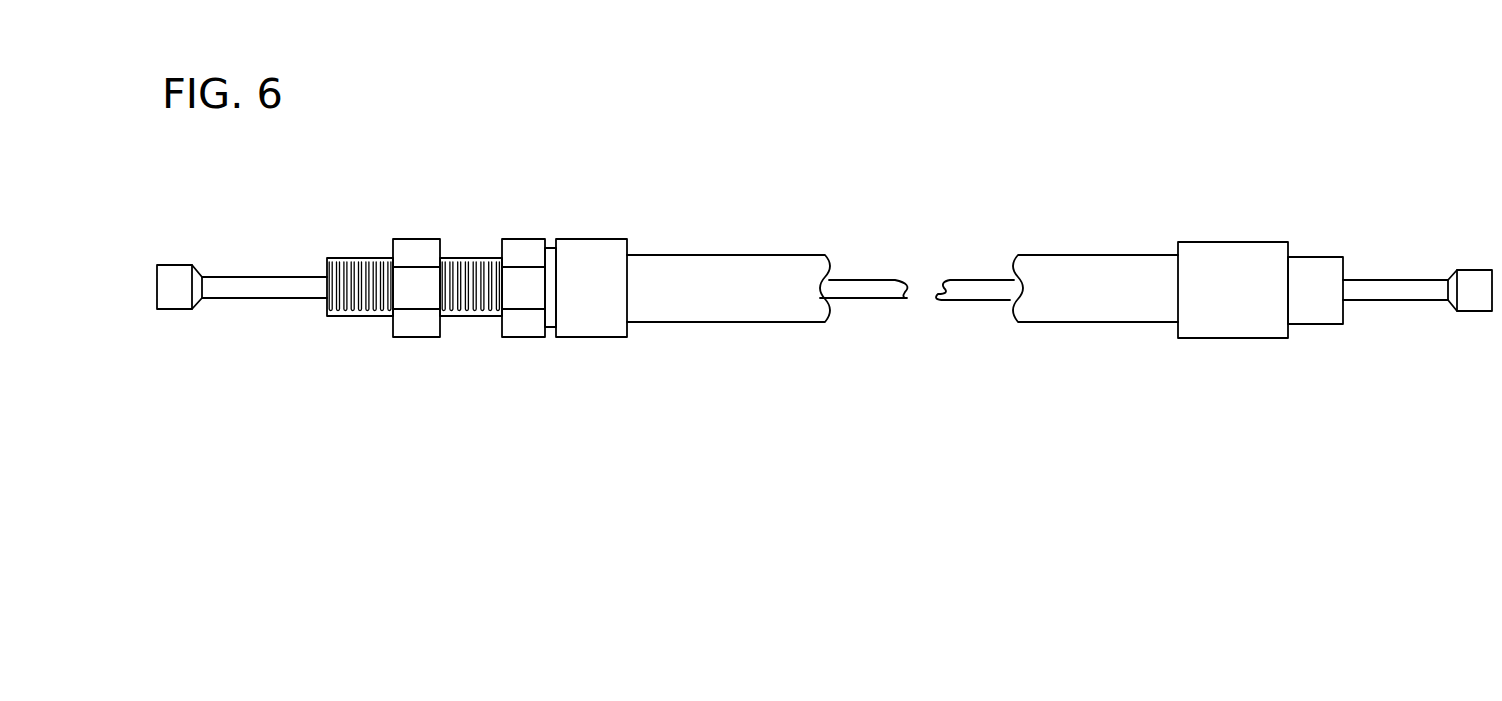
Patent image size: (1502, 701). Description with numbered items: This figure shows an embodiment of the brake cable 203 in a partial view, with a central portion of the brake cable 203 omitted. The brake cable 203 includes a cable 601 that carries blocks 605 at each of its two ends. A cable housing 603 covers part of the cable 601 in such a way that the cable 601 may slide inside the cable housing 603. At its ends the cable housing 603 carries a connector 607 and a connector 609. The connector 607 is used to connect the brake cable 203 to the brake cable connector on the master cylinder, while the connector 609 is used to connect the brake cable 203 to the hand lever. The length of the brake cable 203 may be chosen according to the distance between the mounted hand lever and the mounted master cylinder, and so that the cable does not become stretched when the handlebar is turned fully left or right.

The brake cable 203 is at (545, 403).
The cable 601 is at (253, 294).
The cable housing 603 is at (718, 275).
The blocks 605 is at (194, 267).
The connector 607 is at (630, 212).
The connector 609 is at (1225, 255).